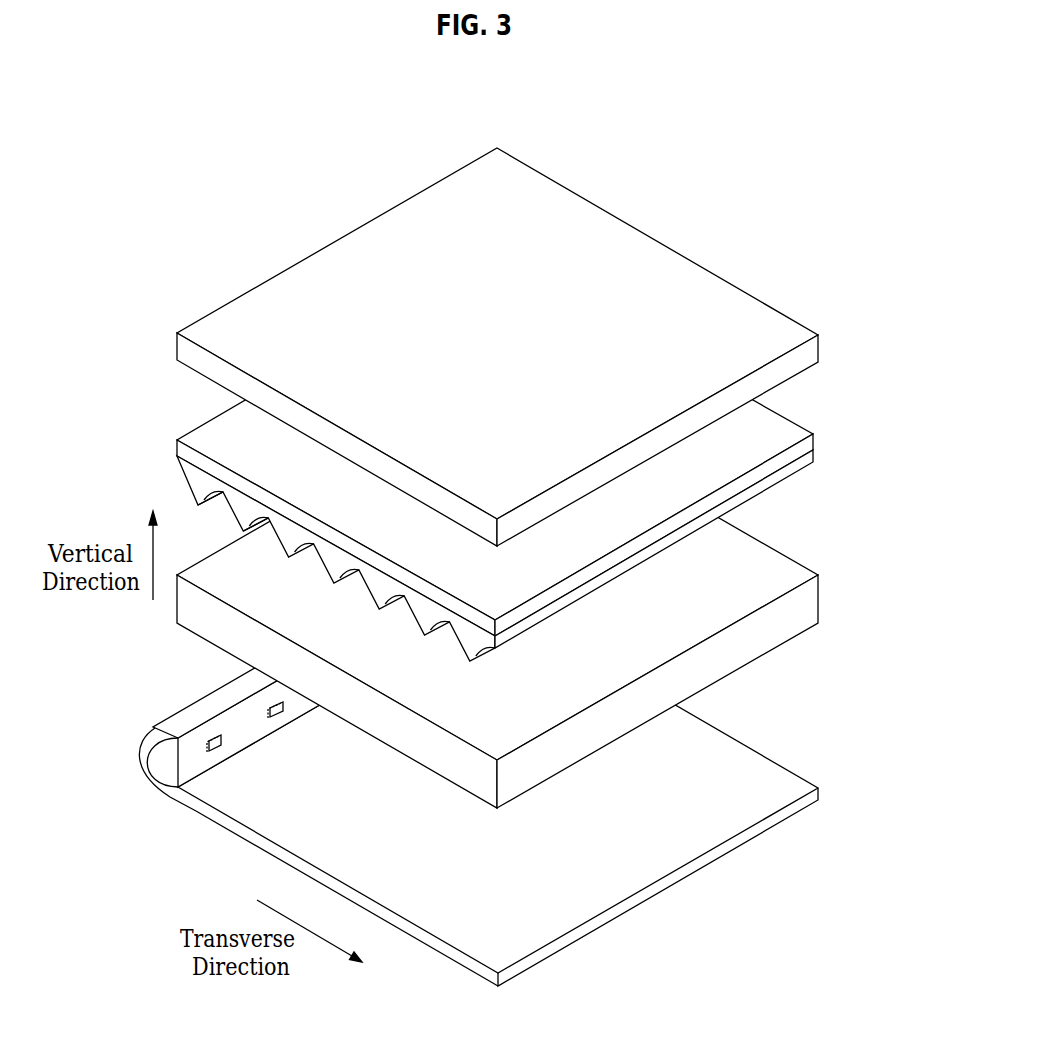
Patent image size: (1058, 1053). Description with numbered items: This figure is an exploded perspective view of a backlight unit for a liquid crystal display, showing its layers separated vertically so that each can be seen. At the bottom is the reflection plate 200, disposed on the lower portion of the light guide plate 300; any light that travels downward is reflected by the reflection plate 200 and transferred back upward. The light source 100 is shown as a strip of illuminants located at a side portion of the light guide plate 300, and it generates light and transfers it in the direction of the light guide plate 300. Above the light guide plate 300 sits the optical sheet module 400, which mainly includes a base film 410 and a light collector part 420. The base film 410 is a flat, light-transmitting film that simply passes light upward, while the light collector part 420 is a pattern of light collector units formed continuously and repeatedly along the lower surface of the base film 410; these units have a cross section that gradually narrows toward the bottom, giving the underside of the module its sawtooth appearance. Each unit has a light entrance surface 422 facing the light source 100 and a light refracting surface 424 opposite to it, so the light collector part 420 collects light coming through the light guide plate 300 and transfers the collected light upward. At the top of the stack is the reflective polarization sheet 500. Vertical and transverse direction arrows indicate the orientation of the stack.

The light source 100 is at (217, 754).
The reflection plate 200 is at (770, 777).
The light guide plate 300 is at (773, 565).
The optical sheet module 400 is at (476, 457).
The base film 410 is at (815, 443).
The light collector part 420 is at (466, 550).
The light entrance surface 422 is at (190, 477).
The light refracting surface 424 is at (210, 508).
The reflective polarization sheet 500 is at (773, 313).